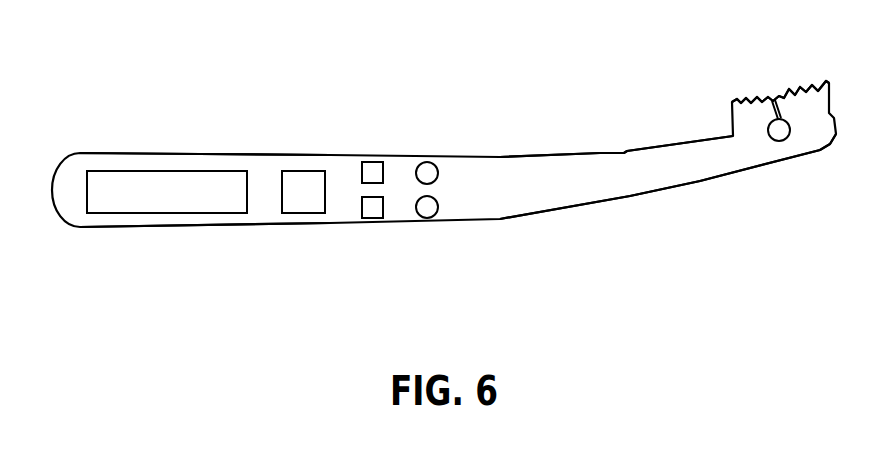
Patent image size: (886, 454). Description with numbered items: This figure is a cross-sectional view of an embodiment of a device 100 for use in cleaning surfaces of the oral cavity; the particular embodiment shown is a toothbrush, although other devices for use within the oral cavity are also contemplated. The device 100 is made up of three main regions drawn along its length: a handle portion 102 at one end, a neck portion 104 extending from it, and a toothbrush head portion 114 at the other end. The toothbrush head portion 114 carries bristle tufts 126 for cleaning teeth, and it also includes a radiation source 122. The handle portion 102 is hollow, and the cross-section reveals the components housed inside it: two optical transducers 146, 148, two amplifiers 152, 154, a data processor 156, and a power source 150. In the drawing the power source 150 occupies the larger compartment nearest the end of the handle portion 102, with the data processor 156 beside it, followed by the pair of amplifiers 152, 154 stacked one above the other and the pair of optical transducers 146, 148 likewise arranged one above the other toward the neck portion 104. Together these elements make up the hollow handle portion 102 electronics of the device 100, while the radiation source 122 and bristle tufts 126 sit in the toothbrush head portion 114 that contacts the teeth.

The device 100 is at (355, 70).
The handle portion 102 is at (162, 138).
The neck portion 104 is at (660, 127).
The toothbrush head portion 114 is at (800, 170).
The radiation source 122 is at (780, 130).
The bristle tufts 126 is at (805, 95).
The optical transducer 146 is at (423, 170).
The optical transducer 148 is at (432, 210).
The power source 150 is at (172, 202).
The amplifier 152 is at (373, 170).
The amplifier 154 is at (373, 210).
The data processor 156 is at (302, 199).